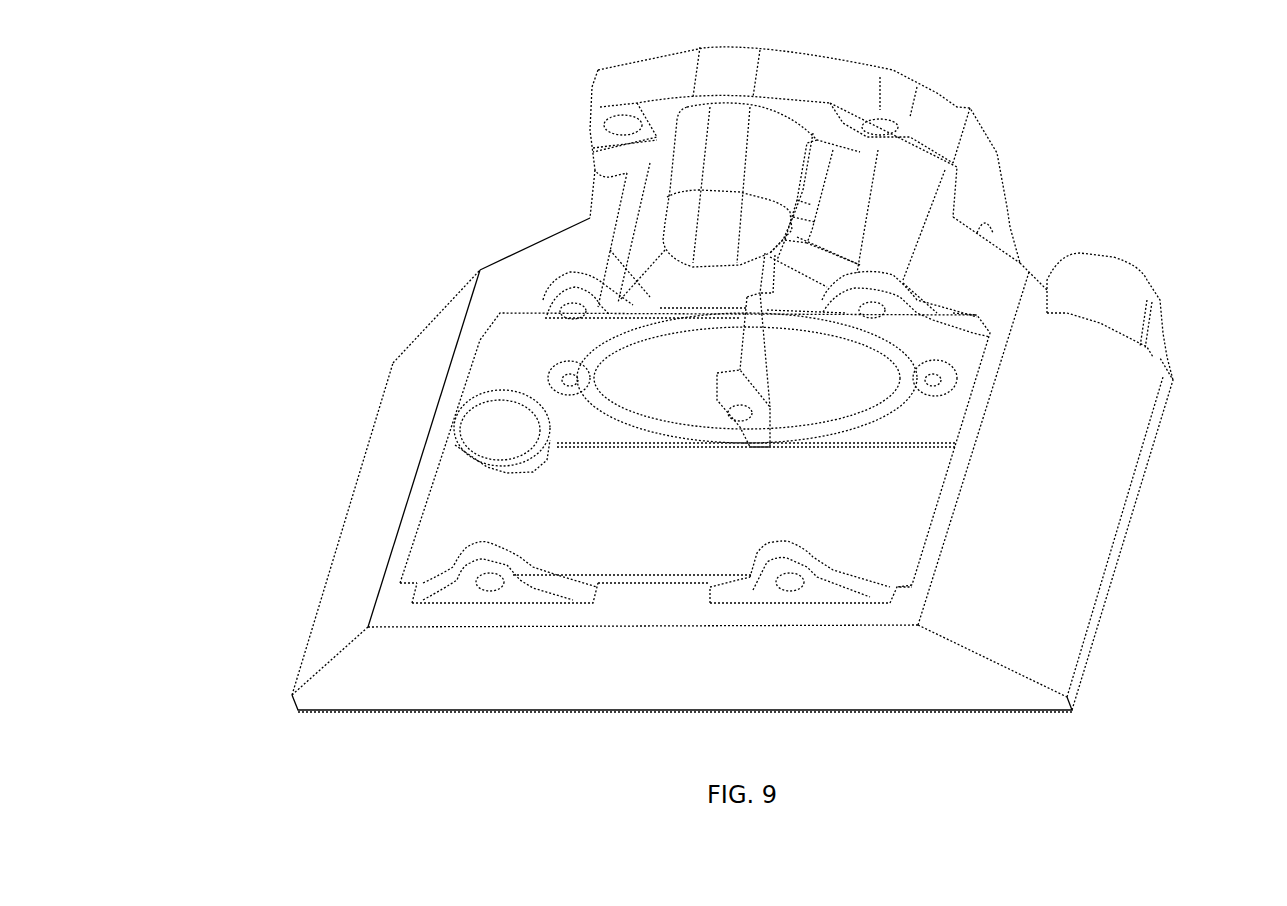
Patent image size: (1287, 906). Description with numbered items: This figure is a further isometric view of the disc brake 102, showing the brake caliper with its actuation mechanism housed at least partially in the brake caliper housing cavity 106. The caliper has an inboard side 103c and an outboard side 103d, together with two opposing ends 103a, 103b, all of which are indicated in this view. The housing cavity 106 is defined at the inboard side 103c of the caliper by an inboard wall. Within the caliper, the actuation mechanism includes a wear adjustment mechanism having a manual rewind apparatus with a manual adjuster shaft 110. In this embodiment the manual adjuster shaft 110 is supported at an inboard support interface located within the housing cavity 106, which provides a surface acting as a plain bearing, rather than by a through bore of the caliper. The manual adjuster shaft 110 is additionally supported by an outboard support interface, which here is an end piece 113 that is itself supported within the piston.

The disc brake 102 is at (1036, 62).
The opposing end of brake caliper 103a is at (353, 540).
The opposing end of brake caliper 103b is at (1053, 470).
The inboard side of brake caliper 103c is at (557, 253).
The outboard side of brake caliper 103d is at (435, 668).
The brake caliper housing cavity 106 is at (832, 369).
The manual adjuster shaft 110 is at (768, 345).
The end piece 113 is at (757, 427).